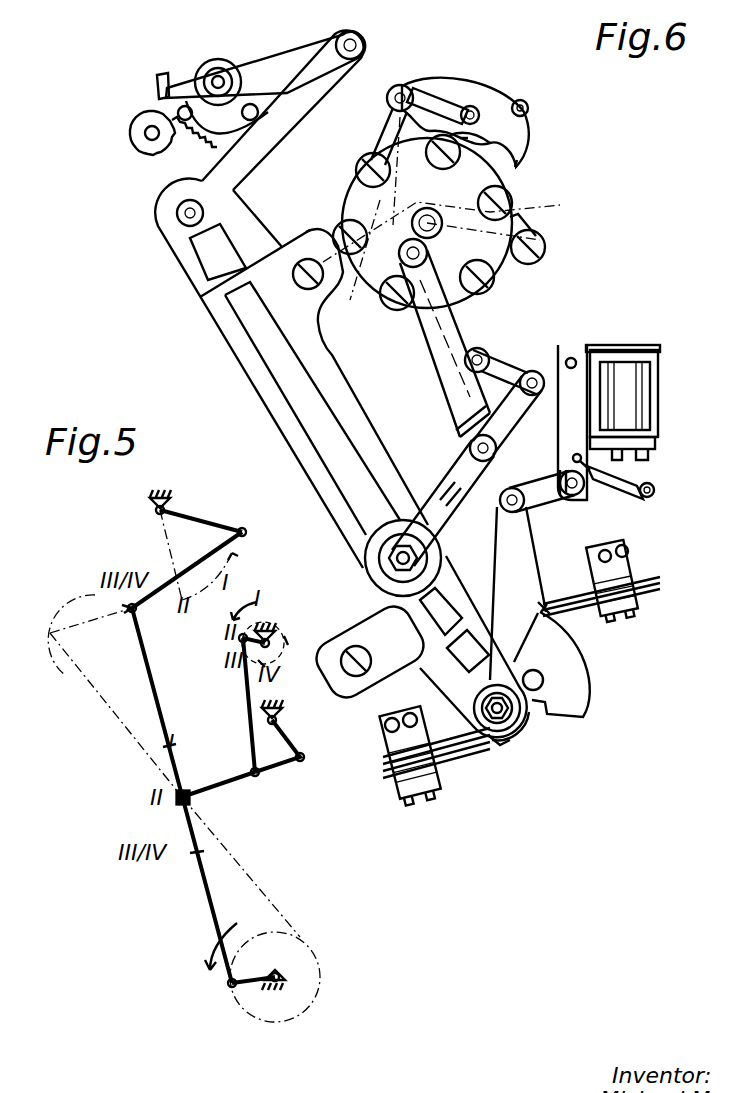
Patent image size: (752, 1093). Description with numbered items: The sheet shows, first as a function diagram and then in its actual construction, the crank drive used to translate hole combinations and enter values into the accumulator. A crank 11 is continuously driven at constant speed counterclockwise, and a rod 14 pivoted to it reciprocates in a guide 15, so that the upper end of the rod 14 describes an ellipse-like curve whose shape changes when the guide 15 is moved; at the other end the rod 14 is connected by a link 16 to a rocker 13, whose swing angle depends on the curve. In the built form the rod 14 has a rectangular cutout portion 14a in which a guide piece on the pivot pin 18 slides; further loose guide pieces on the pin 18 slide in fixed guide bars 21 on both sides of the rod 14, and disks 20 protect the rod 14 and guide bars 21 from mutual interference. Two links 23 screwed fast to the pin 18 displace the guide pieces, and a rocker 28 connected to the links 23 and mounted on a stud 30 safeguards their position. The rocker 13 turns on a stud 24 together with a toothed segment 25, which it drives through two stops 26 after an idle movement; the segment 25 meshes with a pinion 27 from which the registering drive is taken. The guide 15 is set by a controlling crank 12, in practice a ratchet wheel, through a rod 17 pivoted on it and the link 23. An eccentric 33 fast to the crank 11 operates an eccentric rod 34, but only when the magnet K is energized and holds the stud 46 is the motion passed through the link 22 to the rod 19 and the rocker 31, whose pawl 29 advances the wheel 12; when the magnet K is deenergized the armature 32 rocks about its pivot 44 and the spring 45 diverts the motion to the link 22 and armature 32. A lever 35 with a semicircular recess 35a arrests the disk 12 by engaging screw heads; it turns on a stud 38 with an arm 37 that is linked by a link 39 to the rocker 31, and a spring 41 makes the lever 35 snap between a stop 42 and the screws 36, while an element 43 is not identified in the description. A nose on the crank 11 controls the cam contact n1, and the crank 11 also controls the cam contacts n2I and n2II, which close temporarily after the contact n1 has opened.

In FIG. 6, the crank 11 is at (578, 677).
In FIG. 5, the crank 11 is at (247, 995).
In FIG. 6, the crank 12 is at (362, 205).
In FIG. 5, the crank 12 is at (240, 641).
In FIG. 6, the rocker 13 is at (266, 72).
In FIG. 5, the rocker 13 is at (200, 519).
In FIG. 6, the rod 14 is at (172, 221).
In FIG. 5, the rod 14 is at (213, 918).
In FIG. 6, the rectangular cutout portion 14a is at (214, 263).
In FIG. 5, the guide 15 is at (190, 800).
In FIG. 6, the link 16 is at (275, 124).
In FIG. 5, the link 16 is at (218, 553).
In FIG. 6, the rod 17 is at (445, 322).
In FIG. 5, the rod 17 is at (246, 697).
In FIG. 6, the pivot pin 18 is at (396, 557).
In FIG. 6, the rod 19 is at (428, 347).
In FIG. 6, the disks 20 is at (378, 532).
In FIG. 6, the guide bars 21 is at (226, 312).
In FIG. 6, the link 22 is at (548, 502).
In FIG. 6, the links 23 is at (460, 470).
In FIG. 5, the links 23 is at (231, 785).
In FIG. 6, the stud 24 is at (218, 72).
In FIG. 6, the toothed segment 25 is at (163, 72).
In FIG. 6, the stops 26 is at (245, 118).
In FIG. 6, the pinion 27 is at (140, 130).
In FIG. 6, the rocker 28 is at (514, 372).
In FIG. 5, the rocker 28 is at (290, 740).
In FIG. 6, the pawl 29 is at (522, 224).
In FIG. 6, the stud 30 is at (486, 360).
In FIG. 6, the rocker 31 is at (515, 260).
In FIG. 6, the armature 32 is at (574, 437).
In FIG. 6, the eccentric 33 is at (535, 740).
In FIG. 6, the eccentric rod 34 is at (520, 560).
In FIG. 6, the lever 35 is at (486, 105).
In FIG. 6, the semicircular recess 35a is at (512, 149).
In FIG. 6, the screws 36 is at (482, 290).
In FIG. 6, the arm 37 is at (412, 90).
In FIG. 6, the stud 38 is at (388, 106).
In FIG. 6, the link 39 is at (396, 131).
In FIG. 6, the spring 41 is at (442, 95).
In FIG. 6, the stop 42 is at (520, 99).
In FIG. 6, the notch 43 is at (466, 140).
In FIG. 6, the pivot 44 is at (572, 357).
In FIG. 6, the spring 45 is at (642, 482).
In FIG. 6, the stud 46 is at (583, 491).
In FIG. 6, the magnet K is at (642, 392).
In FIG. 6, the cam contact n1 is at (556, 610).
In FIG. 6, the cam contact n2I is at (512, 745).
In FIG. 6, the cam contact n2II is at (497, 745).